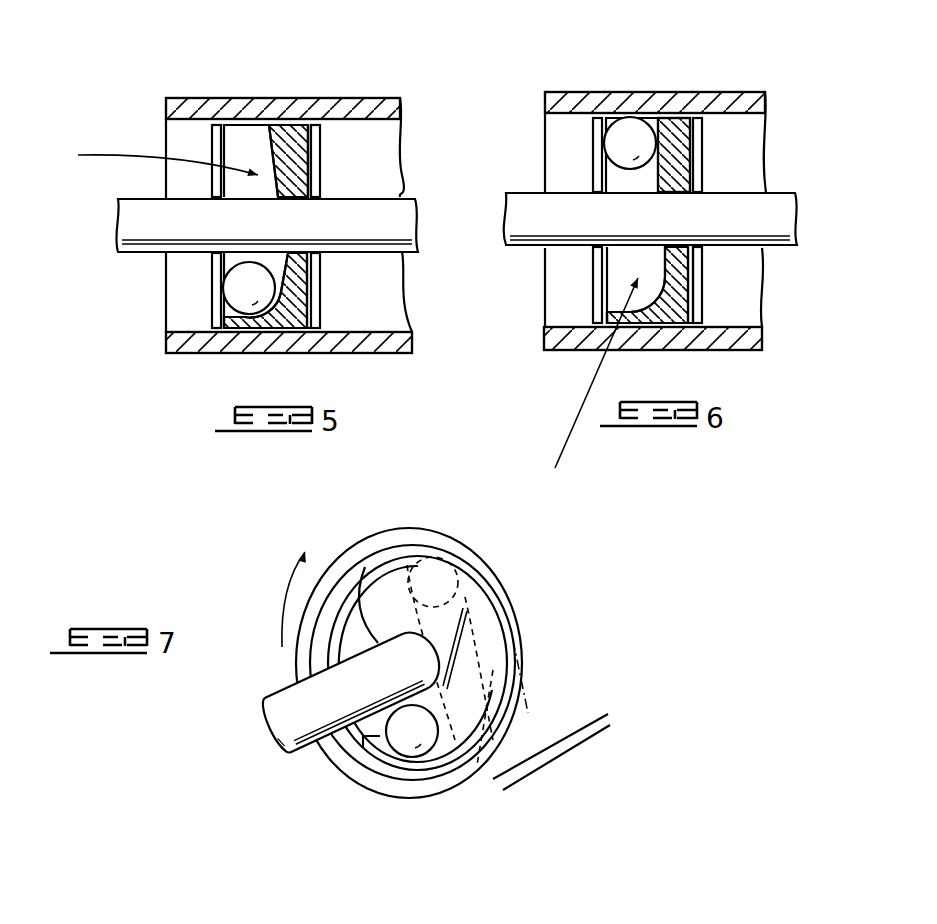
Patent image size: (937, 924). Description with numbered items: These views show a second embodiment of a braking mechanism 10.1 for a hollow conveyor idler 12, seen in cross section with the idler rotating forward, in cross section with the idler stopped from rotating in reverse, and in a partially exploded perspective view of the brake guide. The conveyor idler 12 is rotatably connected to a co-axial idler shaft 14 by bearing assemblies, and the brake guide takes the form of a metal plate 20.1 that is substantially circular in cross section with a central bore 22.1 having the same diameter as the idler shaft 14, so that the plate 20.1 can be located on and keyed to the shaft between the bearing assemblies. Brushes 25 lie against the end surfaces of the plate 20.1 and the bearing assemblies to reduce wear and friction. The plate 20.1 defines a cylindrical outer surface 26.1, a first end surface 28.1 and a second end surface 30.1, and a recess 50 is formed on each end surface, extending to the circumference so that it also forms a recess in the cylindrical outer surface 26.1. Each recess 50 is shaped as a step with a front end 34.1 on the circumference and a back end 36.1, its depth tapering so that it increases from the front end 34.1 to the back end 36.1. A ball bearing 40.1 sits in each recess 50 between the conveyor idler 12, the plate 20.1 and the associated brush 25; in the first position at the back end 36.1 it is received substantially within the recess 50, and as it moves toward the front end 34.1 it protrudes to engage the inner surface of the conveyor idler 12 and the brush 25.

In FIG. 5, the braking mechanism 10.1 is at (349, 154).
In FIG. 6, the braking mechanism 10.1 is at (737, 154).
In FIG. 5, the conveyor idler 12 is at (195, 357).
In FIG. 6, the conveyor idler 12 is at (740, 92).
In FIG. 7, the conveyor idler 12 is at (553, 590).
In FIG. 5, the idler shaft 14 is at (116, 243).
In FIG. 6, the idler shaft 14 is at (788, 215).
In FIG. 7, the idler shaft 14 is at (295, 755).
In FIG. 5, the plate 20.1 is at (278, 333).
In FIG. 6, the plate 20.1 is at (670, 317).
In FIG. 7, the plate 20.1 is at (457, 737).
In FIG. 5, the bore 22.1 is at (302, 131).
In FIG. 5, the brushes 25 is at (211, 307).
In FIG. 6, the brushes 25 is at (595, 167).
In FIG. 5, the cylindrical outer surface 26.1 is at (297, 178).
In FIG. 6, the cylindrical outer surface 26.1 is at (673, 120).
In FIG. 5, the first end surface 28.1 is at (248, 332).
In FIG. 6, the first end surface 28.1 is at (617, 323).
In FIG. 7, the first end surface 28.1 is at (468, 660).
In FIG. 6, the second end surface 30.1 is at (688, 275).
In FIG. 5, the front end 34.1 is at (245, 135).
In FIG. 7, the front end 34.1 is at (352, 585).
In FIG. 6, the back end 36.1 is at (617, 298).
In FIG. 5, the ball bearing 40.1 is at (247, 310).
In FIG. 6, the ball bearing 40.1 is at (630, 127).
In FIG. 7, the ball bearing 40.1 is at (408, 745).
In FIG. 5, the recess 50 is at (145, 160).
In FIG. 6, the recess 50 is at (596, 373).
In FIG. 7, the recess 50 is at (373, 530).